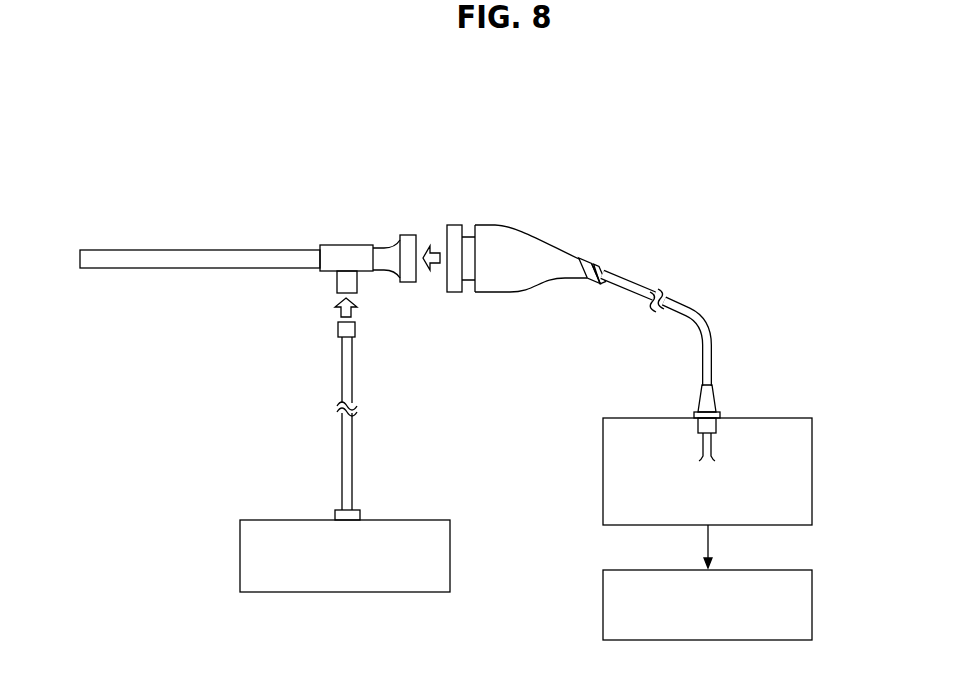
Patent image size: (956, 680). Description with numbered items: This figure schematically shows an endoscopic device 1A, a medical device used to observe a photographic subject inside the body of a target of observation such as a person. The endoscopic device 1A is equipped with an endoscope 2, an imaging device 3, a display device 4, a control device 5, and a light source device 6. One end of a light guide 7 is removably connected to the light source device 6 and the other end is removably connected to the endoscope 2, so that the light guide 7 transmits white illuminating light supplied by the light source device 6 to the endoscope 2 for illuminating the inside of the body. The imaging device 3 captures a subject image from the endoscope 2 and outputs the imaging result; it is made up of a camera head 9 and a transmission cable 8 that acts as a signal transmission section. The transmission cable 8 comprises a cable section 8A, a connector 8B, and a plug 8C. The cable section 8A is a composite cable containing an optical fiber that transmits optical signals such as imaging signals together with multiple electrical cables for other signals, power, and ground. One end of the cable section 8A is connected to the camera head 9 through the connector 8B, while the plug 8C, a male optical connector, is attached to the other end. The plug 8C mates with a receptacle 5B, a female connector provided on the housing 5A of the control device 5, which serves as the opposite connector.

The endoscopic device 1A is at (683, 125).
The endoscope 2 is at (203, 250).
The imaging device 3 is at (642, 178).
The camera head 9 is at (498, 225).
The transmission cable 8 is at (674, 295).
The cable section 8A is at (716, 357).
The connector 8B is at (585, 285).
The plug 8C is at (718, 400).
The control device 5 is at (676, 457).
The housing 5A is at (782, 418).
The receptacle 5B is at (718, 425).
The display device 4 is at (769, 570).
The light source device 6 is at (405, 520).
The light guide 7 is at (341, 460).